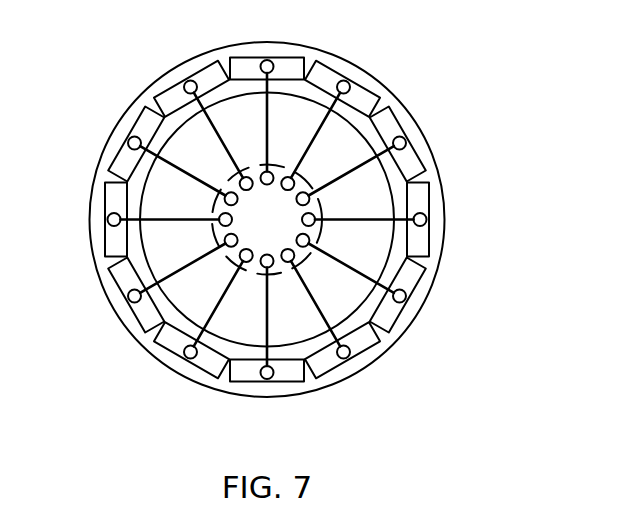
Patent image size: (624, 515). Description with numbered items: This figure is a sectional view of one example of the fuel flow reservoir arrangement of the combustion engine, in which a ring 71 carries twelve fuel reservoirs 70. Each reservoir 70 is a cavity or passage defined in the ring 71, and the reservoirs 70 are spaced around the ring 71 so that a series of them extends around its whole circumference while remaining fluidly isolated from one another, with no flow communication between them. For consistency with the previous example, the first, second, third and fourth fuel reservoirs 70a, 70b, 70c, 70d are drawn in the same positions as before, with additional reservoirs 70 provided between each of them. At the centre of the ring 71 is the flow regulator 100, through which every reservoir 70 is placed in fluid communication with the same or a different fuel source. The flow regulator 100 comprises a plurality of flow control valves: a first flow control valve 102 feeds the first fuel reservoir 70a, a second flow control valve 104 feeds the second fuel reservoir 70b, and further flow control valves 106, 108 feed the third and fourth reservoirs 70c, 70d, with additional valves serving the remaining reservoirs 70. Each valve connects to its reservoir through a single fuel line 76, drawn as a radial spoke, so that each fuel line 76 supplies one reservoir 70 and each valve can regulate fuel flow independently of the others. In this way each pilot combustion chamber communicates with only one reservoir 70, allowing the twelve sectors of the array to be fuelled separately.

The fuel reservoir 70 is at (203, 65).
The first fuel reservoir 70a is at (115, 200).
The second fuel reservoir 70b is at (422, 208).
The third fuel reservoir 70c is at (293, 62).
The fourth fuel reservoir 70d is at (283, 380).
The ring 71 is at (157, 91).
The fuel line 76 is at (218, 137).
The flow regulator 100 is at (241, 232).
The first flow control valve 102 is at (218, 215).
The second flow control valve 104 is at (320, 215).
The flow control valve 106 is at (240, 180).
The flow control valve 108 is at (240, 262).